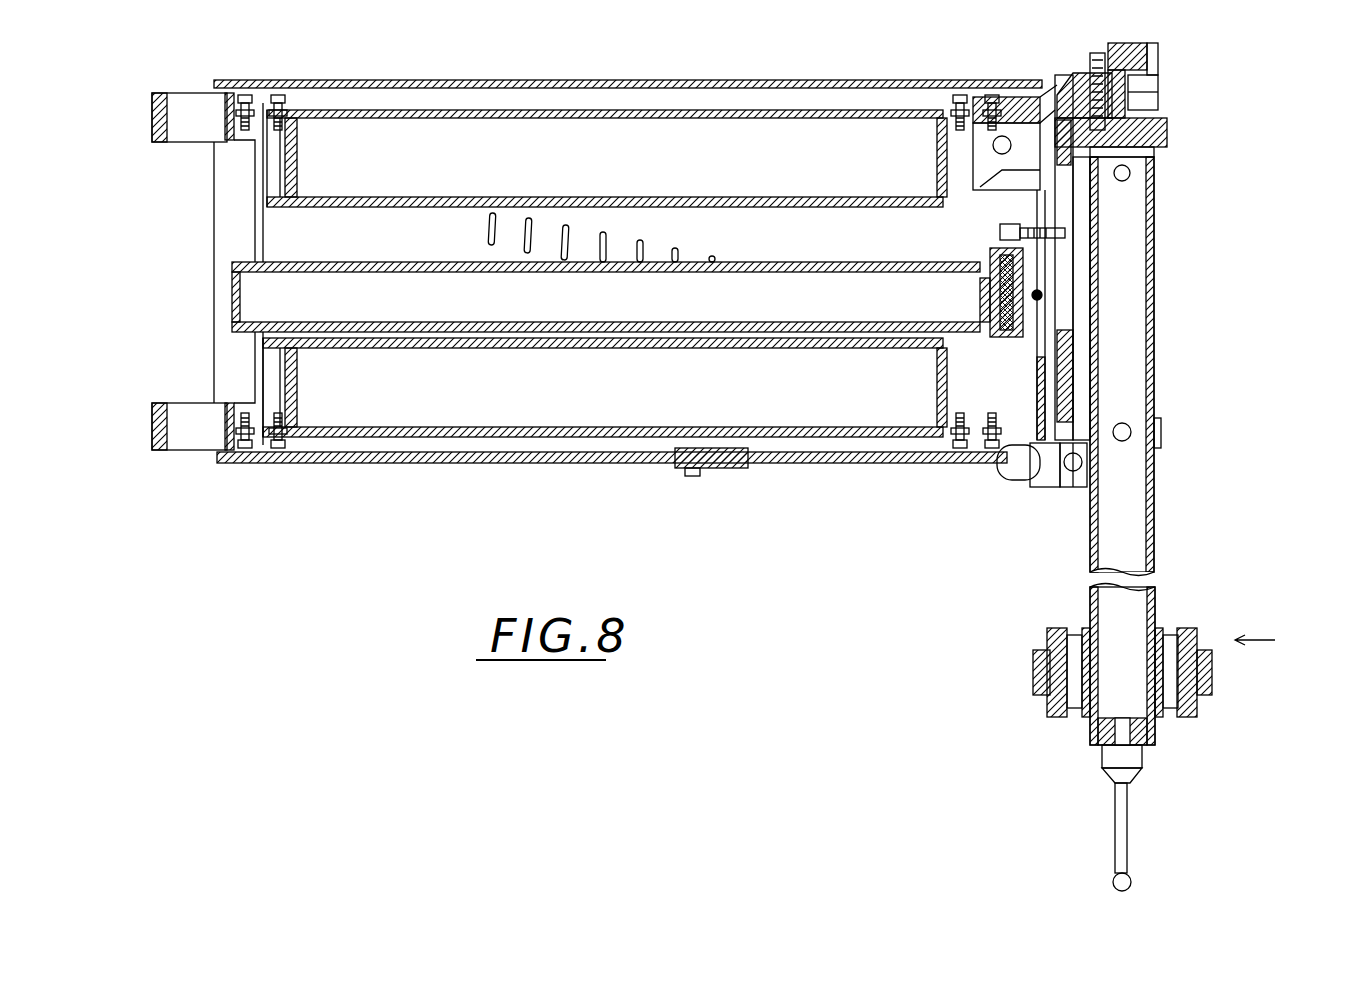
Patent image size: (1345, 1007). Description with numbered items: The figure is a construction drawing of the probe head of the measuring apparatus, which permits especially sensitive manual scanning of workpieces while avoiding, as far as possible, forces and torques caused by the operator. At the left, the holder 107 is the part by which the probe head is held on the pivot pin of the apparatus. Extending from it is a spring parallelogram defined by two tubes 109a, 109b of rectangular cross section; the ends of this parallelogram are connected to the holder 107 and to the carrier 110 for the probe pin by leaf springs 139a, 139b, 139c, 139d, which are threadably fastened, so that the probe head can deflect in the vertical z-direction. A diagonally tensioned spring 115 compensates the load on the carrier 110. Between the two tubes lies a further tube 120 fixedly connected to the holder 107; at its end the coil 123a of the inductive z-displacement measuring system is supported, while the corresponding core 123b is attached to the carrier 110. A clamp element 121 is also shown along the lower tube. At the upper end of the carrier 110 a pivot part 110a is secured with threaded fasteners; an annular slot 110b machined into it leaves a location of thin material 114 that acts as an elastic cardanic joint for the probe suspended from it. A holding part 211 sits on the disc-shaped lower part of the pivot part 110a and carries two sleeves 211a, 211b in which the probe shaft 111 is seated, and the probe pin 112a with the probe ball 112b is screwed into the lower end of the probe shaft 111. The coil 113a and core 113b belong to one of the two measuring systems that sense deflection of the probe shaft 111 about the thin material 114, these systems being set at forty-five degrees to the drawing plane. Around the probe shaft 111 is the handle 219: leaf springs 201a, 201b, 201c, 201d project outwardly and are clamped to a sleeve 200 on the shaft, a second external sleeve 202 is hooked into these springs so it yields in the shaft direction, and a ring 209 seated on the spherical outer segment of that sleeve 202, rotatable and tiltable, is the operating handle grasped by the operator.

The holder 107 is at (160, 455).
The tube 109a is at (421, 117).
The tube 109b is at (476, 356).
The carrier 110 is at (1020, 433).
The pivot part 110a is at (1147, 52).
The annular slot 110b is at (1170, 112).
The probe shaft 111 is at (1155, 362).
The probe pin 112a is at (1125, 812).
The probe ball 112b is at (1130, 880).
The coil 113a is at (1068, 487).
The core 113b is at (1087, 490).
The location of thin material 114 is at (1160, 92).
The diagonally tensioned spring 115 is at (488, 242).
The tube 120 is at (548, 318).
The clamp block 121 is at (791, 463).
The coil 123a is at (985, 340).
The core 123b is at (998, 232).
The leaf spring 139a is at (263, 103).
The leaf spring 139b is at (265, 447).
The leaf spring 139c is at (977, 86).
The leaf spring 139d is at (975, 463).
The sleeve 200 is at (1160, 628).
The leaf spring 201a is at (1060, 630).
The leaf spring 201b is at (1065, 718).
The leaf spring 201c is at (1190, 630).
The leaf spring 201d is at (1170, 718).
The second external sleeve 202 is at (1213, 665).
The ring 209 is at (1033, 665).
The holding part 211 is at (1073, 200).
The sleeve 211a is at (1165, 150).
The sleeve 211b is at (1162, 432).
The handle 219 is at (1288, 632).